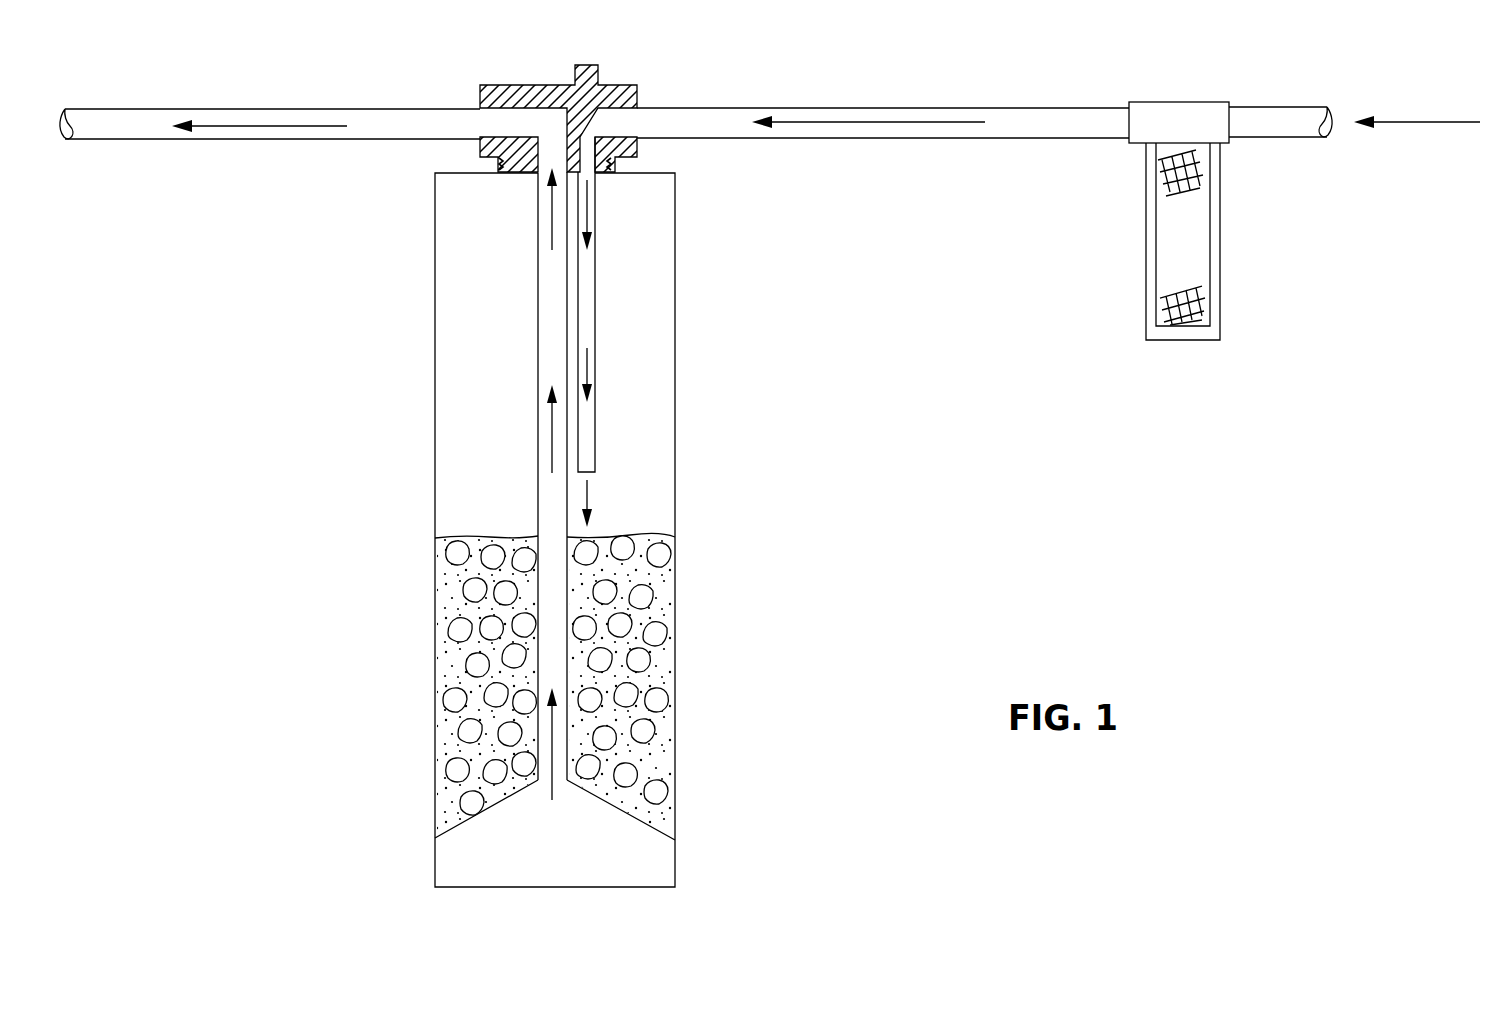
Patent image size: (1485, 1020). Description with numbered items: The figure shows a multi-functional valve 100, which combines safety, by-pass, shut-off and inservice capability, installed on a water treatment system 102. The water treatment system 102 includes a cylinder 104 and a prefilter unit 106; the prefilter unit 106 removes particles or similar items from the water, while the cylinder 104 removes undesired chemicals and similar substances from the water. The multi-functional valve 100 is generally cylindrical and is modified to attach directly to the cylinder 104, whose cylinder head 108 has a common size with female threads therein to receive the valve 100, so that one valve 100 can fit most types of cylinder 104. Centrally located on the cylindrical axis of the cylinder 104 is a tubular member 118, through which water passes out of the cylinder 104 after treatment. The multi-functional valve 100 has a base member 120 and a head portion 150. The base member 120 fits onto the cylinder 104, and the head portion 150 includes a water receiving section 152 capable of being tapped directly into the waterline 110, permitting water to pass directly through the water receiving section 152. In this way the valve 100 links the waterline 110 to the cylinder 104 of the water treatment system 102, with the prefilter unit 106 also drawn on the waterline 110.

The multi-functional valve 100 is at (537, 104).
The water treatment system 102 is at (706, 452).
The cylinder 104 is at (640, 350).
The prefilter unit 106 is at (1221, 298).
The cylinder head 108 is at (612, 170).
The waterline 110 is at (1015, 108).
The tubular member 118 is at (548, 364).
The base member 120 is at (503, 170).
The head portion 150 is at (481, 108).
The water receiving section 152 is at (638, 108).